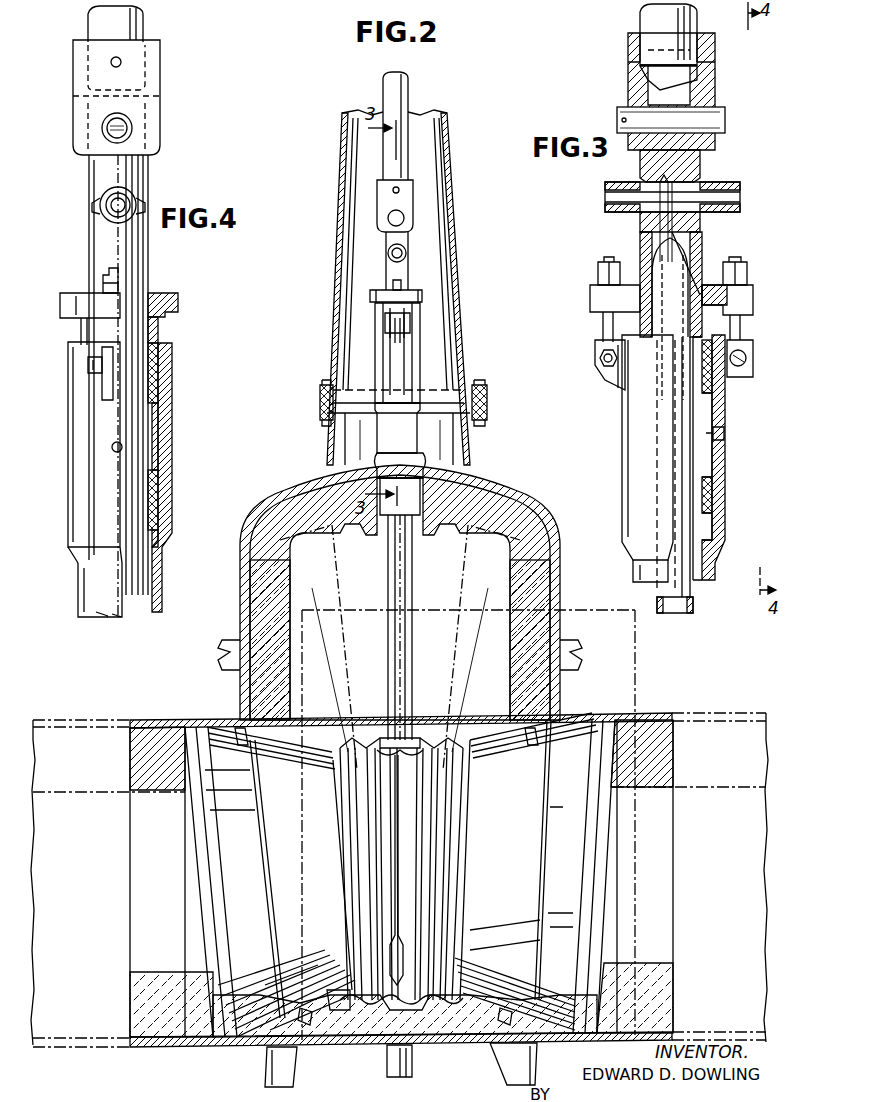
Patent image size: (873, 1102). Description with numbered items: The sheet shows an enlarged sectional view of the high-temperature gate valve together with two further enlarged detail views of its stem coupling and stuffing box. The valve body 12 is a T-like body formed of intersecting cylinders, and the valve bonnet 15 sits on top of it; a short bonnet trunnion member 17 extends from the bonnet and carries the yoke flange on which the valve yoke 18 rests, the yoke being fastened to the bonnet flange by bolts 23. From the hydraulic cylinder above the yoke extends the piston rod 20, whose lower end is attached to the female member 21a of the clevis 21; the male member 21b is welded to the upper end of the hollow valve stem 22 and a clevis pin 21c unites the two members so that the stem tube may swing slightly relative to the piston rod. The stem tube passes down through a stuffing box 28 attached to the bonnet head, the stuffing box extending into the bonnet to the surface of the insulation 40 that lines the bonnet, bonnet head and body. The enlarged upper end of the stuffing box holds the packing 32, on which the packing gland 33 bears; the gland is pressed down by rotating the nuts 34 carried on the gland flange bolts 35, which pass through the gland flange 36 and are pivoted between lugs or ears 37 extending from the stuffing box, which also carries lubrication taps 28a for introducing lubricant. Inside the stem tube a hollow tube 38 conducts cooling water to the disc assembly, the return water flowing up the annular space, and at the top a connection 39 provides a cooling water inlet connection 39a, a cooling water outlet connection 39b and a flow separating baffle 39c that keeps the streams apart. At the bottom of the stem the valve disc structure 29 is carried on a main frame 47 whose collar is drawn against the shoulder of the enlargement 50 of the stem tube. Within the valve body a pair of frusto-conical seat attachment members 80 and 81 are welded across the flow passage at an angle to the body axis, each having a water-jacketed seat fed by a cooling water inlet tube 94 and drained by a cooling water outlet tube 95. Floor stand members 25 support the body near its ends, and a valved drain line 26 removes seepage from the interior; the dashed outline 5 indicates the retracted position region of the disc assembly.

In FIG. 2, the valve element region 5 is at (636, 662).
In FIG. 2, the valve body 12 is at (182, 716).
In FIG. 2, the valve bonnet 15 is at (480, 475).
In FIG. 2, the bonnet trunnion member 17 is at (330, 432).
In FIG. 2, the valve yoke 18 is at (340, 165).
In FIG. 4, the piston rod 20 is at (96, 24).
In FIG. 3, the piston rod 20 is at (648, 18).
In FIG. 2, the piston rod 20 is at (404, 95).
In FIG. 4, the clevis 21 is at (72, 103).
In FIG. 3, the clevis 21 is at (622, 85).
In FIG. 2, the clevis 21 is at (408, 200).
In FIG. 3, the female member 21a is at (712, 78).
In FIG. 3, the male member 21b is at (700, 160).
In FIG. 4, the clevis pin 21c is at (128, 120).
In FIG. 3, the clevis pin 21c is at (725, 113).
In FIG. 4, the valve stem 22 is at (140, 574).
In FIG. 3, the valve stem 22 is at (642, 252).
In FIG. 2, the valve stem 22 is at (414, 583).
In FIG. 2, the bolts 23 is at (320, 388).
In FIG. 2, the floor stand members 25 is at (267, 1075).
In FIG. 2, the valved drain line 26 is at (387, 1070).
In FIG. 4, the stuffing box 28 is at (68, 520).
In FIG. 3, the stuffing box 28 is at (728, 492).
In FIG. 2, the stuffing box 28 is at (420, 352).
In FIG. 4, the lubrication taps 28a is at (112, 447).
In FIG. 3, the lubrication taps 28a is at (724, 440).
In FIG. 2, the valve disc structure 29 is at (335, 590).
In FIG. 4, the packing 32 is at (158, 367).
In FIG. 3, the packing 32 is at (712, 385).
In FIG. 4, the packing gland 33 is at (158, 332).
In FIG. 3, the packing gland 33 is at (720, 312).
In FIG. 4, the gland bolts 34 is at (103, 285).
In FIG. 3, the gland bolts 34 is at (598, 276).
In FIG. 4, the gland flange bolts 35 is at (112, 330).
In FIG. 3, the gland flange bolts 35 is at (603, 330).
In FIG. 4, the gland flange 36 is at (172, 293).
In FIG. 3, the gland flange 36 is at (590, 303).
In FIG. 2, the gland flange 36 is at (375, 292).
In FIG. 4, the lugs or ears 37 is at (102, 391).
In FIG. 3, the lugs or ears 37 is at (600, 392).
In FIG. 3, the hollow tube 38 is at (700, 606).
In FIG. 4, the connection 39 is at (104, 216).
In FIG. 3, the connection 39 is at (612, 218).
In FIG. 3, the cooling water inlet connection 39a is at (740, 185).
In FIG. 3, the cooling water outlet connection 39b is at (605, 185).
In FIG. 3, the flow separating baffle 39c is at (700, 224).
In FIG. 2, the insulation 40 is at (516, 636).
In FIG. 2, the main frame 47 is at (408, 998).
In FIG. 2, the enlargement 50 is at (390, 738).
In FIG. 2, the frusto-conical seat attachment member 80 is at (535, 873).
In FIG. 2, the frusto-conical seat attachment member 81 is at (270, 882).
In FIG. 2, the cooling water inlet tube 94 is at (505, 1012).
In FIG. 2, the cooling water outlet tube 95 is at (525, 737).